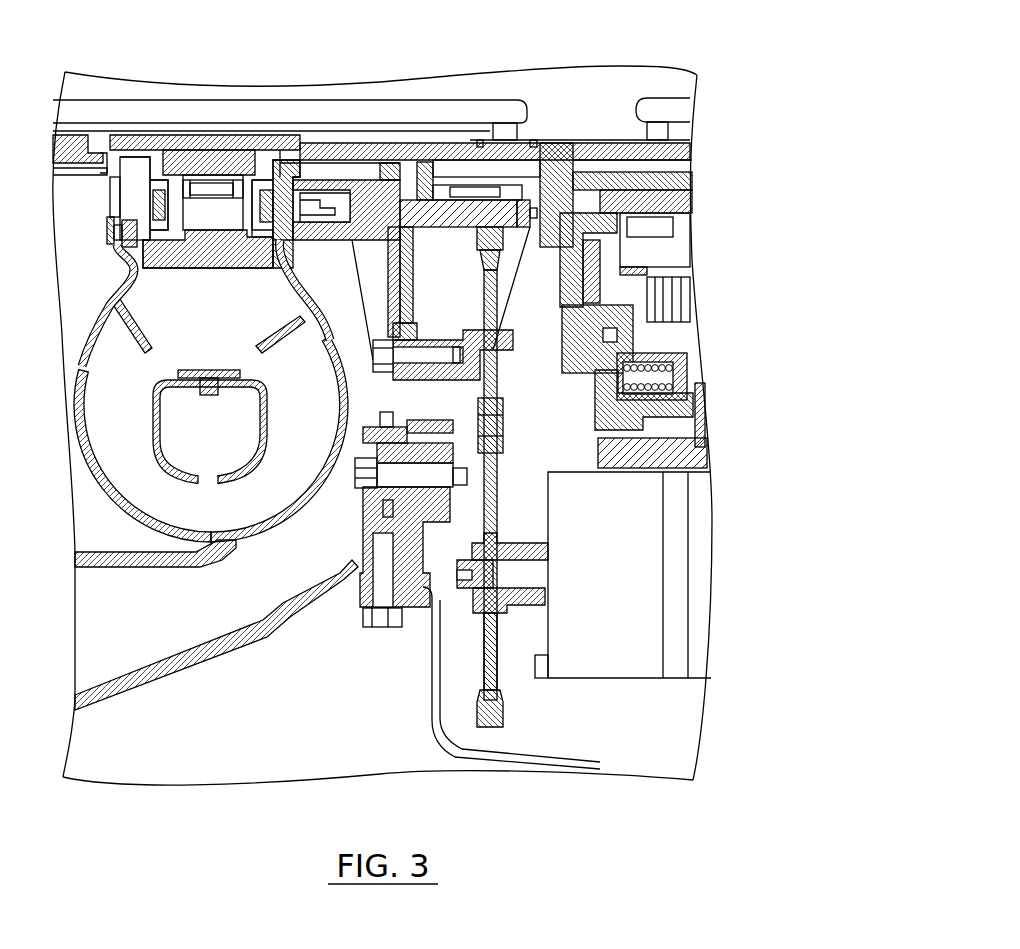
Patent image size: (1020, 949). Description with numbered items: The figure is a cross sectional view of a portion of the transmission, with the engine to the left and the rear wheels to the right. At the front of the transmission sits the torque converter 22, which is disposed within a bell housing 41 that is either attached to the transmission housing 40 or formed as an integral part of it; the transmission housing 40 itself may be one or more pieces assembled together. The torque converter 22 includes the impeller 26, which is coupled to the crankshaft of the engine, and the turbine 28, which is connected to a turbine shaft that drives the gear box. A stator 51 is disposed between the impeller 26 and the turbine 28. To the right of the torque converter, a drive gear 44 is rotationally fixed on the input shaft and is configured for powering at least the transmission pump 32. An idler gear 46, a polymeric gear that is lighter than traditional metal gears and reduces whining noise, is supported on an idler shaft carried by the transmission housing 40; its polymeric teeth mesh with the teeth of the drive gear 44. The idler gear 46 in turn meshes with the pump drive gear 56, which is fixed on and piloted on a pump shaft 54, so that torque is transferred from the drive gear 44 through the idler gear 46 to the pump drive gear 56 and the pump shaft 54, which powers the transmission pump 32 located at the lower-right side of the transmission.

The torque converter 22 is at (88, 284).
The impeller 26 is at (307, 493).
The turbine 28 is at (122, 503).
The transmission pump 32 is at (602, 580).
The transmission housing 40 is at (427, 683).
The bell housing 41 is at (170, 672).
The drive gear 44 is at (433, 200).
The idler gear 46 is at (482, 296).
The stator 51 is at (207, 397).
The pump shaft 54 is at (540, 570).
The pump drive gear 56 is at (497, 670).